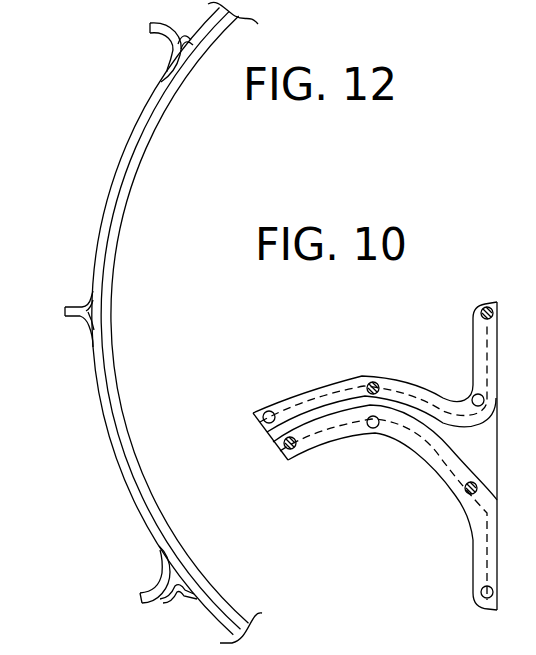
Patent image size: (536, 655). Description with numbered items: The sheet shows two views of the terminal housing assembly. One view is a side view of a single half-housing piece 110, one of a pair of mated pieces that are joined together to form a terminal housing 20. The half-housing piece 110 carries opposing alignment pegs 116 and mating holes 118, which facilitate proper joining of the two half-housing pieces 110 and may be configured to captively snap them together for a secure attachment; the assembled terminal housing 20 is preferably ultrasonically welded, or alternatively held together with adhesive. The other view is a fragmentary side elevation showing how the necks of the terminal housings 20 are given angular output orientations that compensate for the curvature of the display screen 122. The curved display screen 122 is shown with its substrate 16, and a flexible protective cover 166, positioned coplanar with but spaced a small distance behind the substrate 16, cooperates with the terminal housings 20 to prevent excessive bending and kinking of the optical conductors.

In FIG. 12, the substrate 16 is at (136, 322).
In FIG. 12, the terminal housing 20 is at (150, 35).
In FIG. 12, the display screen 122 is at (110, 193).
In FIG. 12, the flexible protective cover 166 is at (108, 240).
In FIG. 10, the half-housing piece 110 is at (403, 385).
In FIG. 10, the alignment peg 116 is at (483, 309).
In FIG. 10, the mating hole 118 is at (268, 407).